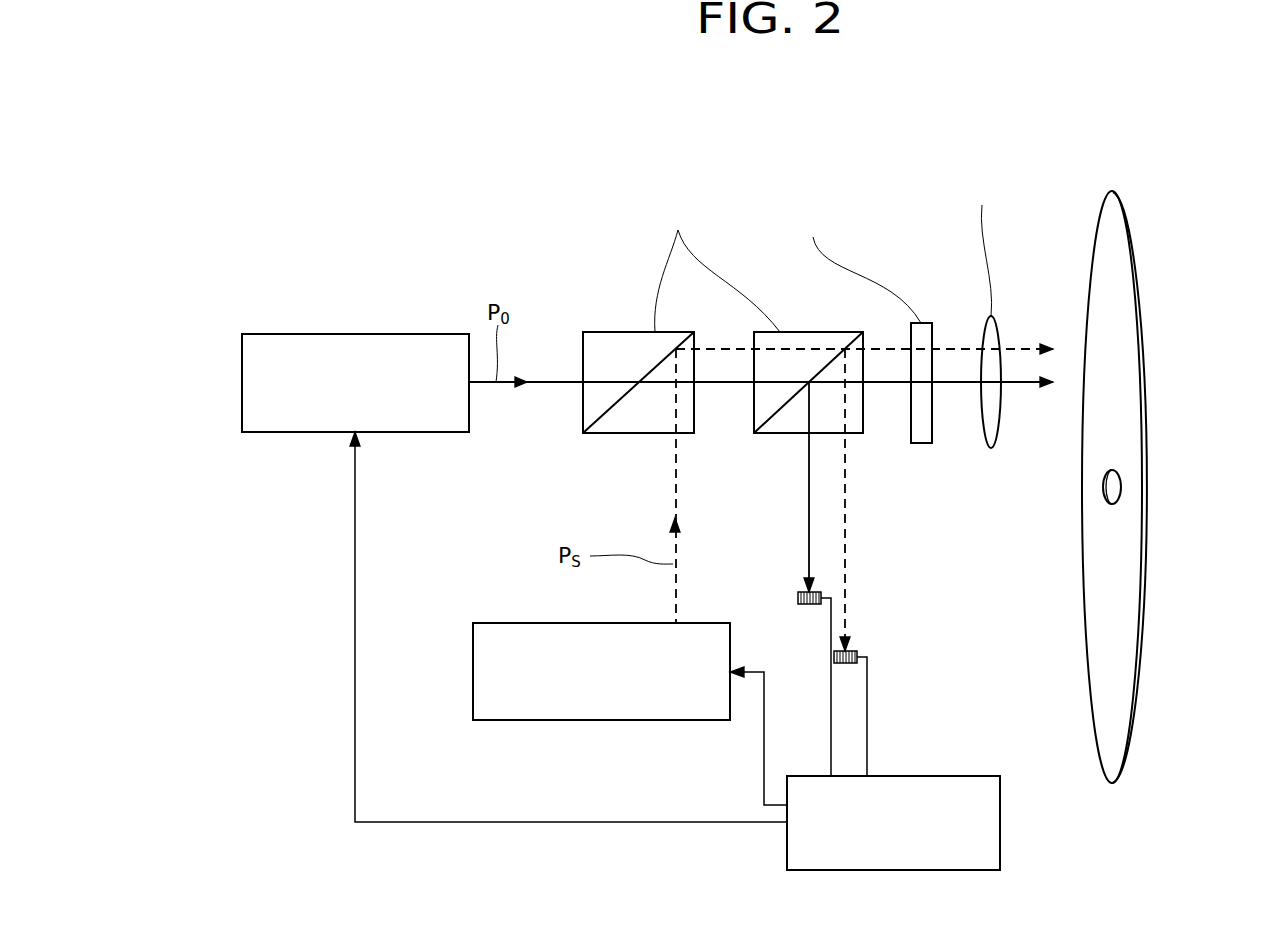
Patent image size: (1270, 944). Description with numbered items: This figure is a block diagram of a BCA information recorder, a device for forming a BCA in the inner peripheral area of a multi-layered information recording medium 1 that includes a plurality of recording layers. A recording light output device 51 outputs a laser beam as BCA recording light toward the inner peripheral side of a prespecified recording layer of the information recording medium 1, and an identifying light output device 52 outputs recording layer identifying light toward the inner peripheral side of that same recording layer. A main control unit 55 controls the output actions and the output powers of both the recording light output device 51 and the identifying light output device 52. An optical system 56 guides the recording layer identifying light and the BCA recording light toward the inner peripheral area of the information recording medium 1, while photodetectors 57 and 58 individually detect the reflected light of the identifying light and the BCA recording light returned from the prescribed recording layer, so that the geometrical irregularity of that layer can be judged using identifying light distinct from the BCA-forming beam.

The information recording medium 1 is at (1137, 254).
The recording light output device 51 is at (310, 334).
The identifying light output device 52 is at (612, 720).
The main control unit 55 is at (1000, 790).
The optical system 56 is at (1090, 143).
The photodetector 57 is at (800, 592).
The photodetector 58 is at (852, 651).